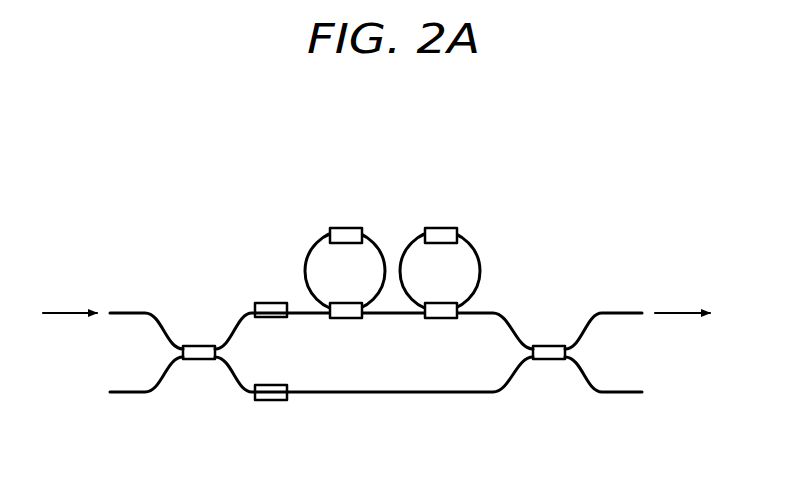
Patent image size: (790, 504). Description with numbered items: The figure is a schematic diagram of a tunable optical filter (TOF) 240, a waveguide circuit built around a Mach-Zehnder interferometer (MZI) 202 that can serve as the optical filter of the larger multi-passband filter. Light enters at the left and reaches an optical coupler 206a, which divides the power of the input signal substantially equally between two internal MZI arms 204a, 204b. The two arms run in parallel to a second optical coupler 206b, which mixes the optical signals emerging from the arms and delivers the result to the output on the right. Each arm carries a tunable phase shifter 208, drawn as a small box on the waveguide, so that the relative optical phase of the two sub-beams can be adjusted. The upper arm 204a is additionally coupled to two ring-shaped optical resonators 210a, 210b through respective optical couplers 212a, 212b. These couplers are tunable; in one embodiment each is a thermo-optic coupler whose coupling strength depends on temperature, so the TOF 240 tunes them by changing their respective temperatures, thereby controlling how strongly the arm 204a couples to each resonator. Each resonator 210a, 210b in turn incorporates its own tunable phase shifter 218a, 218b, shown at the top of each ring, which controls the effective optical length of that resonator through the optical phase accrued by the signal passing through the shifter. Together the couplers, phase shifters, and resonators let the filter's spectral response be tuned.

The tunable optical filter 240 is at (410, 98).
The Mach-Zehnder interferometer 202 is at (210, 419).
The MZI arm 204a is at (497, 312).
The MZI arm 204b is at (405, 393).
The optical coupler 206a is at (199, 345).
The optical coupler 206b is at (548, 360).
The tunable phase shifter 208 is at (270, 318).
The optical resonator 210a is at (306, 229).
The optical resonator 210b is at (482, 228).
The optical coupler 212a is at (345, 318).
The optical coupler 212b is at (440, 318).
The tunable phase shifter 218a is at (345, 227).
The tunable phase shifter 218b is at (440, 227).